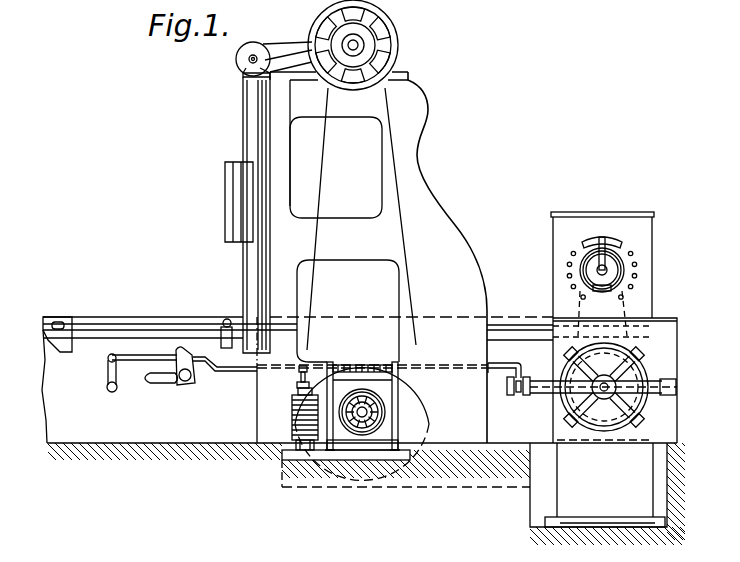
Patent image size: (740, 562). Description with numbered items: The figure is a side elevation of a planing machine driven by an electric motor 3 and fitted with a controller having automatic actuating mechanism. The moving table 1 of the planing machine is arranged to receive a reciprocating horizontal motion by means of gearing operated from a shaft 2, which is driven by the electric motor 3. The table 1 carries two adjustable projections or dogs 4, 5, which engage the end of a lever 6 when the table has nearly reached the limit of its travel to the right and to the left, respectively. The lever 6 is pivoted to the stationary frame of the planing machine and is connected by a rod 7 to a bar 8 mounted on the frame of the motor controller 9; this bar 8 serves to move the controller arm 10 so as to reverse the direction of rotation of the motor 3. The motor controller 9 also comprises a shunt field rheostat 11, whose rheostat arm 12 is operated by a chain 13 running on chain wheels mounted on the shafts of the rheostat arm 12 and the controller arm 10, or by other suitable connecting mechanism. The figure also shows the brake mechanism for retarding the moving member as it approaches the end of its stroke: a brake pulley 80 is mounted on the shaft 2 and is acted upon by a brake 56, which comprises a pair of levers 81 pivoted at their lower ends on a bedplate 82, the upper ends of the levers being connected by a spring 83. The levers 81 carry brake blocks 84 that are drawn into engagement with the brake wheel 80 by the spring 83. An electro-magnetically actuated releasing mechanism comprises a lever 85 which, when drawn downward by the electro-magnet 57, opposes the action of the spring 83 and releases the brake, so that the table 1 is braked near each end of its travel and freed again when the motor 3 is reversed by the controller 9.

The moving table 1 is at (99, 341).
The shaft 2 is at (373, 413).
The electric motor 3 is at (357, 45).
The dog 4 is at (63, 352).
The dog 5 is at (228, 319).
The lever 6 is at (193, 378).
The rod 7 is at (498, 376).
The bar 8 is at (664, 395).
The motor controller 9 is at (650, 440).
The controller arm 10 is at (641, 353).
The shunt field rheostat 11 is at (612, 327).
The rheostat arm 12 is at (605, 239).
The chain 13 is at (624, 323).
The brake 56 is at (291, 414).
The electro-magnet 57 is at (298, 427).
The brake pulley 80 is at (373, 428).
The levers 81 is at (400, 437).
The bedplate 82 is at (368, 453).
The spring 83 is at (381, 348).
The brake blocks 84 is at (385, 382).
The lever 85 is at (300, 374).